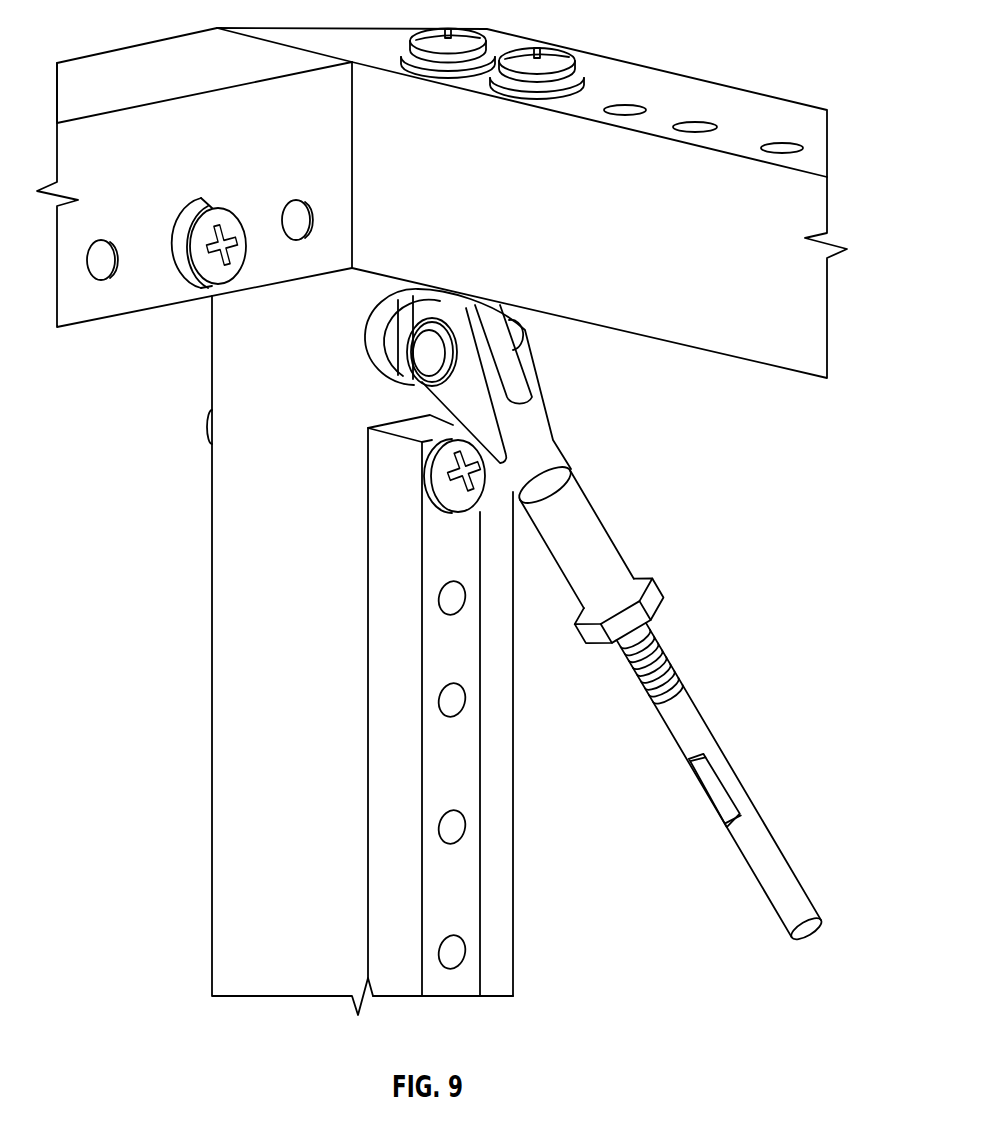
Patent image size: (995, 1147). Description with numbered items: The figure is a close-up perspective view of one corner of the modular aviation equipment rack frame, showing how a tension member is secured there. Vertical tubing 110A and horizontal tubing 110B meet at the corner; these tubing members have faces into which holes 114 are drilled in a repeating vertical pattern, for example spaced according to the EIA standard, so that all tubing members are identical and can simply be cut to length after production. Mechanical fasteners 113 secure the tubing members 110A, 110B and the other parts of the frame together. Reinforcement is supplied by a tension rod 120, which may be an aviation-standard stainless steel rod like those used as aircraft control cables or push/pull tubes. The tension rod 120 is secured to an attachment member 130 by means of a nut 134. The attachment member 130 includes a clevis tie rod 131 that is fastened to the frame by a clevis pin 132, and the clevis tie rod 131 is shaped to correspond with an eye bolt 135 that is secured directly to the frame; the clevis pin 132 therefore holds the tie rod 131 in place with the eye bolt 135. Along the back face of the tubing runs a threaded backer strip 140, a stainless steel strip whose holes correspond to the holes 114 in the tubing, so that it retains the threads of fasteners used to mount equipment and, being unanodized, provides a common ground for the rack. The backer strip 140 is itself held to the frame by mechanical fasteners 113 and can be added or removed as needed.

The vertical tubing 110A is at (310, 548).
The horizontal tubing 110B is at (193, 170).
The mechanical fasteners 113 is at (560, 63).
The holes 114 is at (692, 127).
The tension rod 120 is at (703, 714).
The attachment member 130 is at (598, 488).
The clevis tie rod 131 is at (547, 417).
The clevis pin 132 is at (430, 353).
The nut 134 is at (655, 587).
The eye bolt 135 is at (390, 330).
The threaded backer strip 140 is at (460, 742).